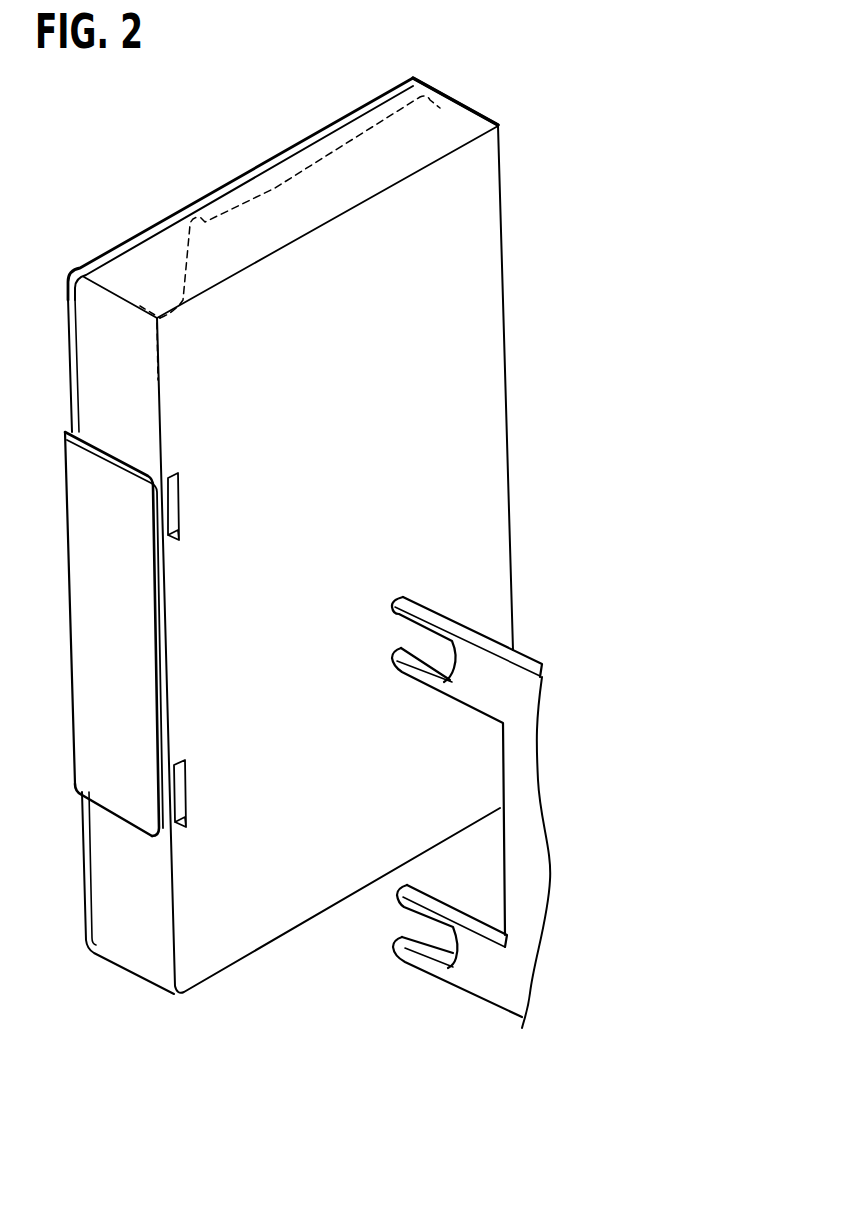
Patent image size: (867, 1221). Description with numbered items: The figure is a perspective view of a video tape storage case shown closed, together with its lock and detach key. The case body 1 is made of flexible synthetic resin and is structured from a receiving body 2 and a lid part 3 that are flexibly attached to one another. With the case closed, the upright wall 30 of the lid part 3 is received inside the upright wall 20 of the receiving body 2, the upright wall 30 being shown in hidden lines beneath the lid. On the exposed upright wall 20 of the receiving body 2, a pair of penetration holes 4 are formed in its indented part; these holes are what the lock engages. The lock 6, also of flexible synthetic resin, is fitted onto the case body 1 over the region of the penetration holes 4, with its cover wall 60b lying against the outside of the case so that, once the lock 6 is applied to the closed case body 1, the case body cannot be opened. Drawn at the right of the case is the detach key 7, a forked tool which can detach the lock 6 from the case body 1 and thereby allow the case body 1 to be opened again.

The case body 1 is at (353, 89).
The receiving body 2 is at (493, 251).
The upright wall 20 is at (452, 122).
The lid part 3 is at (112, 241).
The upright wall 30 is at (275, 188).
The penetration hole 4 is at (173, 476).
The lock 6 is at (58, 593).
The cover wall 60b is at (96, 698).
The detach key 7 is at (508, 678).